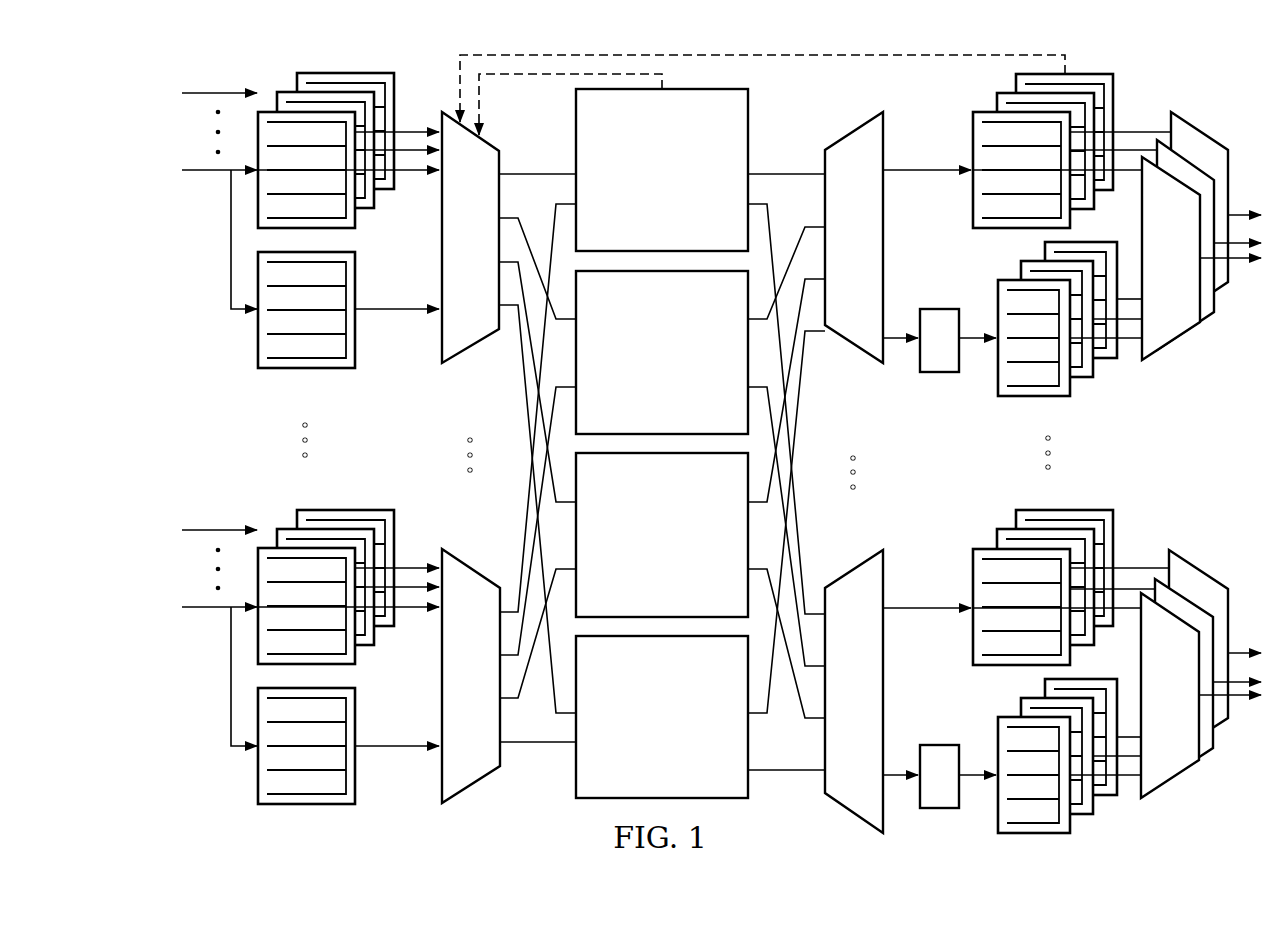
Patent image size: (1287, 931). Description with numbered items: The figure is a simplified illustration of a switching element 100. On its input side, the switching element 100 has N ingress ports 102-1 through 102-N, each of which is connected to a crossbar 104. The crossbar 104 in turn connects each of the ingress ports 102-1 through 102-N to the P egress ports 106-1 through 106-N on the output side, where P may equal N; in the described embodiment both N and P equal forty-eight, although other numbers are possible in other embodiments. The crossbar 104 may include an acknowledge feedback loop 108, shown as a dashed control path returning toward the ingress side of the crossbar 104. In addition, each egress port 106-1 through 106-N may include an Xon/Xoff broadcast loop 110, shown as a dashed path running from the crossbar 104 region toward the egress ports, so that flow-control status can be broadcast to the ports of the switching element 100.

The switching element 100 is at (711, 449).
The ingress port 102-1 is at (224, 365).
The ingress port 102-N is at (257, 504).
The crossbar 104 is at (546, 801).
The egress port 106-1 is at (996, 413).
The egress port 106-N is at (962, 518).
The acknowledge feedback loop 108 is at (537, 76).
The Xon/Xoff broadcast loop 110 is at (762, 57).